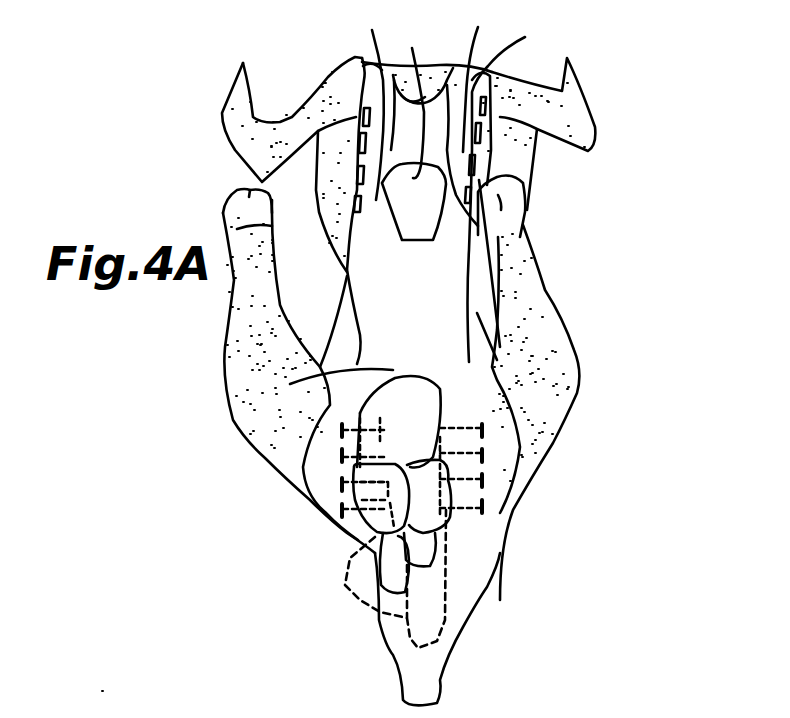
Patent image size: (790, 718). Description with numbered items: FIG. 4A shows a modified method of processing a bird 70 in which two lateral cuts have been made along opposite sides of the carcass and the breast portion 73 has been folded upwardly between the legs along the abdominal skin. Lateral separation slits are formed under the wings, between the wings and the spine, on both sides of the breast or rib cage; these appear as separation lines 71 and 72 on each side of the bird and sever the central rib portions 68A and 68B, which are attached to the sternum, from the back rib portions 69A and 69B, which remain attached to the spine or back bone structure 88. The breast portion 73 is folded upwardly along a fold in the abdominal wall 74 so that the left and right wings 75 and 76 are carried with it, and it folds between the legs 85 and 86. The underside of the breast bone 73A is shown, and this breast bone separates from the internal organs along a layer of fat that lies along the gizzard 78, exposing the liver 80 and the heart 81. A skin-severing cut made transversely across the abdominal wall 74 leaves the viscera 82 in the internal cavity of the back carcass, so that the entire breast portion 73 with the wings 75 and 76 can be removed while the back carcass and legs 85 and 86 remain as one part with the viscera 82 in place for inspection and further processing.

The bird 70 is at (580, 333).
The separation line 71 is at (487, 150).
The separation line 72 is at (347, 280).
The breast portion 73 is at (484, 102).
The underside of the breast bone 73A is at (430, 126).
The fold in the abdominal wall 74 is at (433, 262).
The left wing 75 is at (288, 118).
The right wing 76 is at (585, 114).
The gizzard 78 is at (427, 400).
The liver 80 is at (422, 503).
The heart 81 is at (423, 543).
The viscera 82 is at (290, 384).
The leg 85 is at (257, 318).
The leg 86 is at (530, 290).
The spine or back bone structure 88 is at (349, 568).
The central rib portion 68A is at (344, 111).
The central rib portion 68B is at (525, 189).
The back rib portion 69A is at (342, 428).
The back rib portion 69B is at (485, 430).